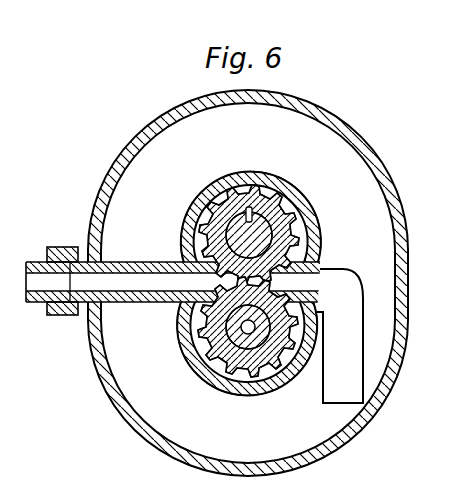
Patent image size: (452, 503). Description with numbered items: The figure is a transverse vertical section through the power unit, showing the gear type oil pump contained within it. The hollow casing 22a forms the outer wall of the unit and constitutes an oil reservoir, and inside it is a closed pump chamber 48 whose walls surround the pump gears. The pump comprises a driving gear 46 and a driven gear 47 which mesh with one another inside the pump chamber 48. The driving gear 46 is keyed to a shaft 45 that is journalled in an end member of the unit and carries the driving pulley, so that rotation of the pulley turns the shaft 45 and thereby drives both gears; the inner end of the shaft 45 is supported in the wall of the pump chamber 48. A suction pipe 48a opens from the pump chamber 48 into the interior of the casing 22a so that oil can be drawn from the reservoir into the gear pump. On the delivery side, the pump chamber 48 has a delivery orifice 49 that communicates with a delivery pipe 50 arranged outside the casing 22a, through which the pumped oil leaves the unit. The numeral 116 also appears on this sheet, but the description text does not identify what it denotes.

The gear pump assembly 116 is at (239, 283).
The hollow casing 22a is at (130, 418).
The pump chamber 48 is at (265, 180).
The driving gear 46 is at (205, 195).
The shaft 45 is at (270, 226).
The driven gear 47 is at (245, 375).
The delivery orifice 49 is at (138, 279).
The delivery pipe 50 is at (37, 262).
The suction pipe 48a is at (347, 388).